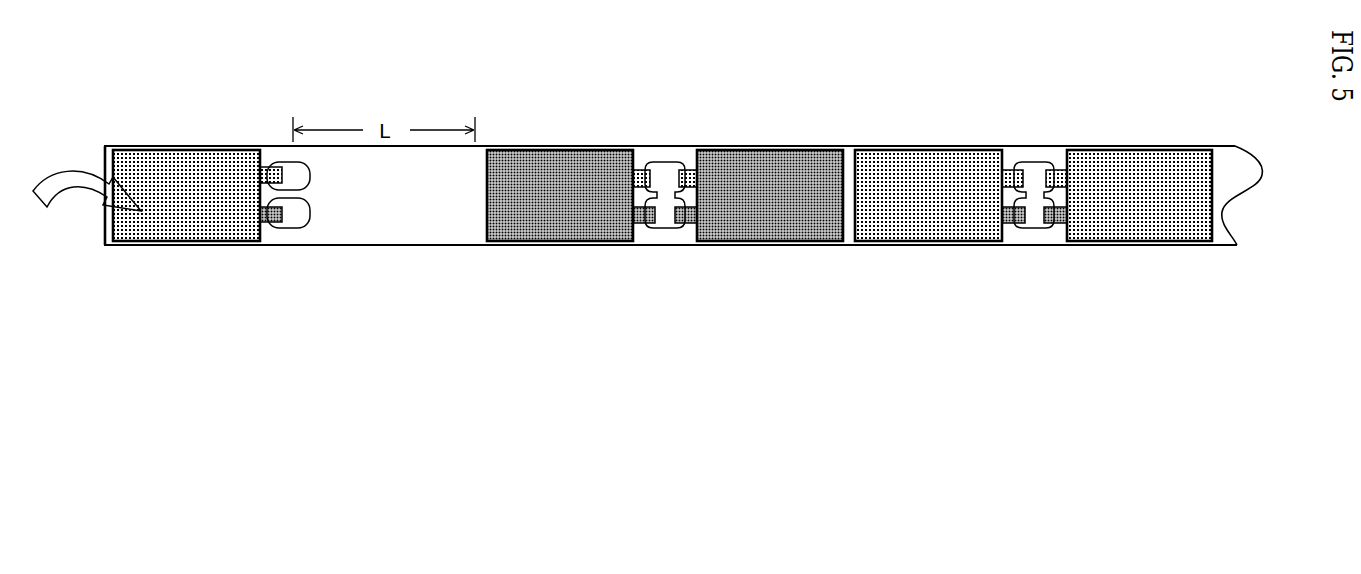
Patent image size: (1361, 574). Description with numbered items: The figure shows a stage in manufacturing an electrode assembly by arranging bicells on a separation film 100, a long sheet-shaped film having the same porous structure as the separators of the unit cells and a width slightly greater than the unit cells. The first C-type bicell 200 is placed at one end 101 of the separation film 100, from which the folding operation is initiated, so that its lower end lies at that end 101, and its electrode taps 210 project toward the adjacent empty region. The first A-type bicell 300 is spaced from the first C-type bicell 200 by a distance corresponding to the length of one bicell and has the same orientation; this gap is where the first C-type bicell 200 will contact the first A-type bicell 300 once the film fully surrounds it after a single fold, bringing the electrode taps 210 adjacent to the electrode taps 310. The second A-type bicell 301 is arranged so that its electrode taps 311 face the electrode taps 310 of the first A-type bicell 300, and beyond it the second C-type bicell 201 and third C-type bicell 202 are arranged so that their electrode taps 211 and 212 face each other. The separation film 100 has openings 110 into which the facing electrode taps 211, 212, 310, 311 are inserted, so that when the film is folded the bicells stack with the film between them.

The separation film 100 is at (387, 238).
The end of the separation film 101 is at (103, 229).
The openings 110 is at (653, 228).
The first C-type bicell 200 is at (185, 150).
The second C-type bicell 201 is at (915, 158).
The third C-type bicell 202 is at (1178, 160).
The electrode taps of the first C-type bicell 210 is at (268, 226).
The electrode taps of the second C-type bicell 211 is at (1020, 228).
The electrode taps of the third C-type bicell 212 is at (1052, 228).
The first A-type bicell 300 is at (547, 158).
The second A-type bicell 301 is at (810, 158).
The electrode taps of the first A-type bicell 310 is at (642, 168).
The electrode taps of the second A-type bicell 311 is at (685, 168).